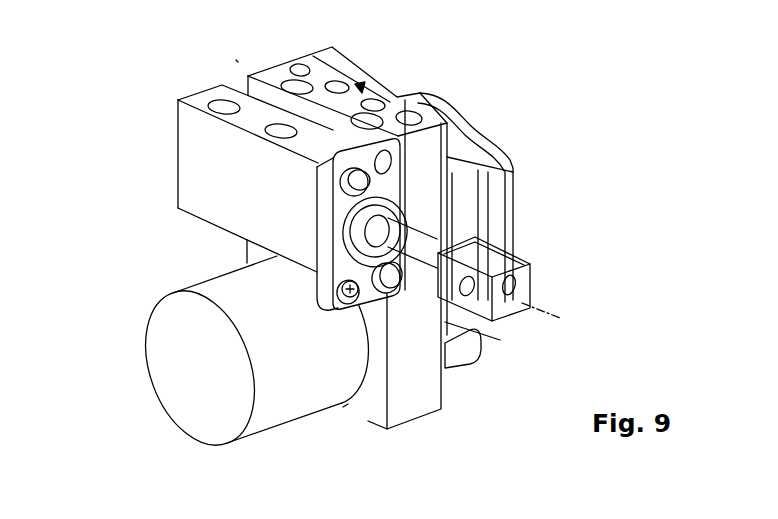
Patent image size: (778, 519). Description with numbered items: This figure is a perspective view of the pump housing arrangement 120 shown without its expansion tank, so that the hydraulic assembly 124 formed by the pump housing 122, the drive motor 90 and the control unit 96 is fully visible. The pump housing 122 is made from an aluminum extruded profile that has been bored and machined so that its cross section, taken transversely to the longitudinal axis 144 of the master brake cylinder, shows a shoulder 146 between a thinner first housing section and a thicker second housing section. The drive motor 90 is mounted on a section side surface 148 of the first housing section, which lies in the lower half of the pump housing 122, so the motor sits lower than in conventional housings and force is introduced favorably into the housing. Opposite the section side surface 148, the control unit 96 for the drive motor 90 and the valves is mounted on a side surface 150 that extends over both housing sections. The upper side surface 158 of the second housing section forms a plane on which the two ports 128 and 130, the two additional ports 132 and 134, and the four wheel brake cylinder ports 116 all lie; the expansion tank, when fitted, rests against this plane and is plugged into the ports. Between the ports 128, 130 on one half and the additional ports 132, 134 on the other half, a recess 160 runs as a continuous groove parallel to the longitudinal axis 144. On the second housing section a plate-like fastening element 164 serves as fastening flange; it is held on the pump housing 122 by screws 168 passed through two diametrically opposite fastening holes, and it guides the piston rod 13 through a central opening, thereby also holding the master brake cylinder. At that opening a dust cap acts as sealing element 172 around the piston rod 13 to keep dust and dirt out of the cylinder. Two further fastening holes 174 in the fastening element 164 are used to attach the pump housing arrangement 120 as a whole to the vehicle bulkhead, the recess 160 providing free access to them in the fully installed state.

The pump housing arrangement 120 is at (162, 54).
The pump housing 122 is at (207, 142).
The hydraulic assembly 124 is at (152, 178).
The port 128 is at (282, 139).
The port 130 is at (222, 101).
The wheel brake cylinder ports 116 is at (299, 65).
The additional port 132 is at (388, 103).
The additional port 134 is at (350, 50).
The upper side surface 158 is at (364, 86).
The recess 160 is at (236, 72).
The control unit 96 is at (503, 193).
The side surface 150 is at (452, 392).
The fastening element 164 is at (343, 203).
The sealing element 172 is at (350, 233).
The further fastening holes 174 is at (337, 291).
The screw 168 is at (396, 288).
The piston rod 13 is at (517, 270).
The longitudinal axis 144 is at (558, 316).
The drive motor 90 is at (160, 368).
The shoulder 146 is at (202, 249).
The section side surface 148 is at (365, 400).